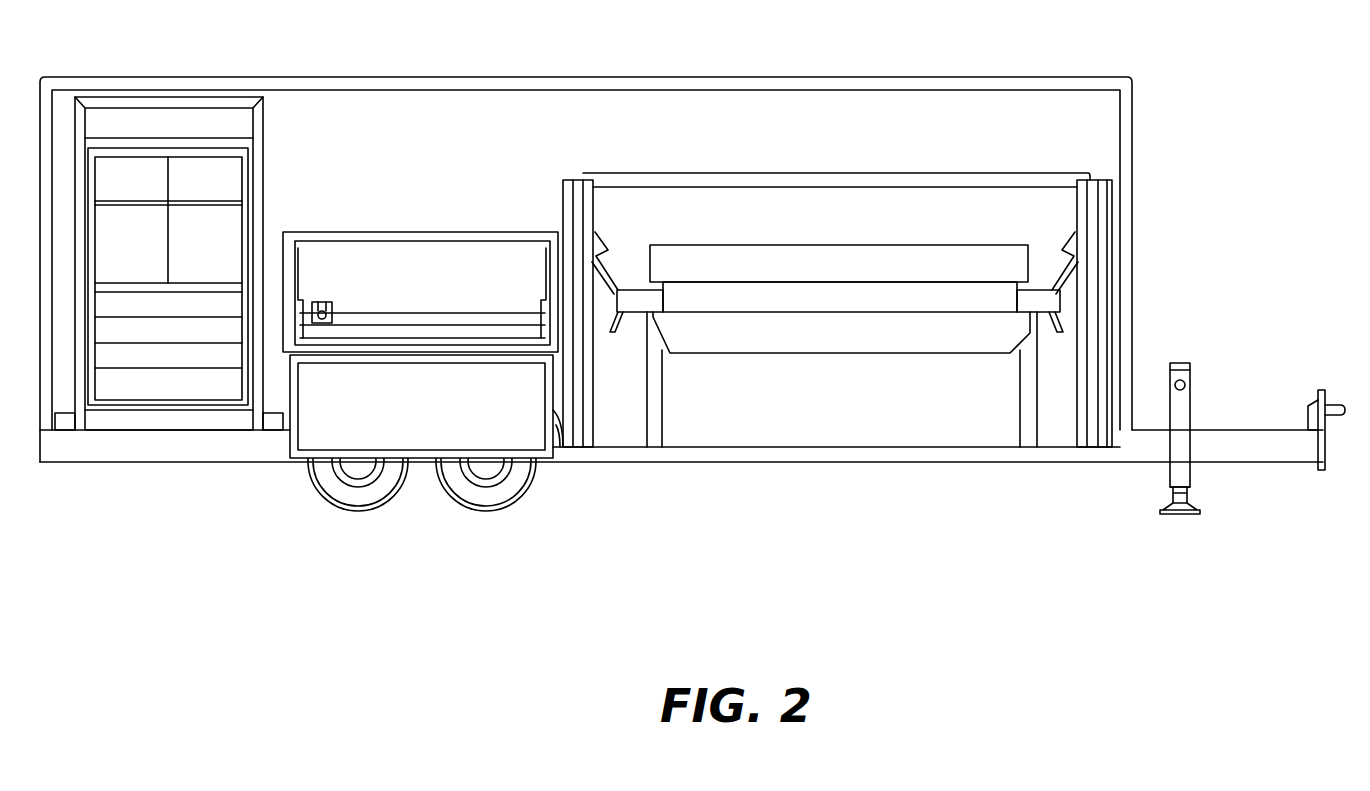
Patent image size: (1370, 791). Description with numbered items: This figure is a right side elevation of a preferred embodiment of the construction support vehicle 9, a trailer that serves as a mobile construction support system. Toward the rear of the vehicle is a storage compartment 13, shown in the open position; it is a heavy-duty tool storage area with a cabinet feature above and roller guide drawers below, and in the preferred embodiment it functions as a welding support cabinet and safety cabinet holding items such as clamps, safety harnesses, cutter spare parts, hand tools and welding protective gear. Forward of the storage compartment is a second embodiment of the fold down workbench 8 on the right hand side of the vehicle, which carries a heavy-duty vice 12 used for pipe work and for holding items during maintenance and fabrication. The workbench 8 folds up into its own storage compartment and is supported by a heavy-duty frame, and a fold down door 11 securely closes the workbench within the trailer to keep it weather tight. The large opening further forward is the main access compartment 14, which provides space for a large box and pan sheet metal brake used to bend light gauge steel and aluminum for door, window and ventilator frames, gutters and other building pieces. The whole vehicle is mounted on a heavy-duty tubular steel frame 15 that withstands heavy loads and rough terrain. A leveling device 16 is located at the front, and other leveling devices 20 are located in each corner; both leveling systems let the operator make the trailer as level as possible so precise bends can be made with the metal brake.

The fold down workbench 8 is at (498, 313).
The construction support vehicle 9 is at (1133, 101).
The fold down door 11 is at (566, 448).
The heavy-duty vice 12 is at (318, 323).
The storage compartment 13 is at (150, 108).
The main access compartment 14 is at (817, 268).
The tubular steel frame 15 is at (1153, 448).
The leveling device 16 is at (1190, 382).
The leveling devices 20 is at (1108, 448).